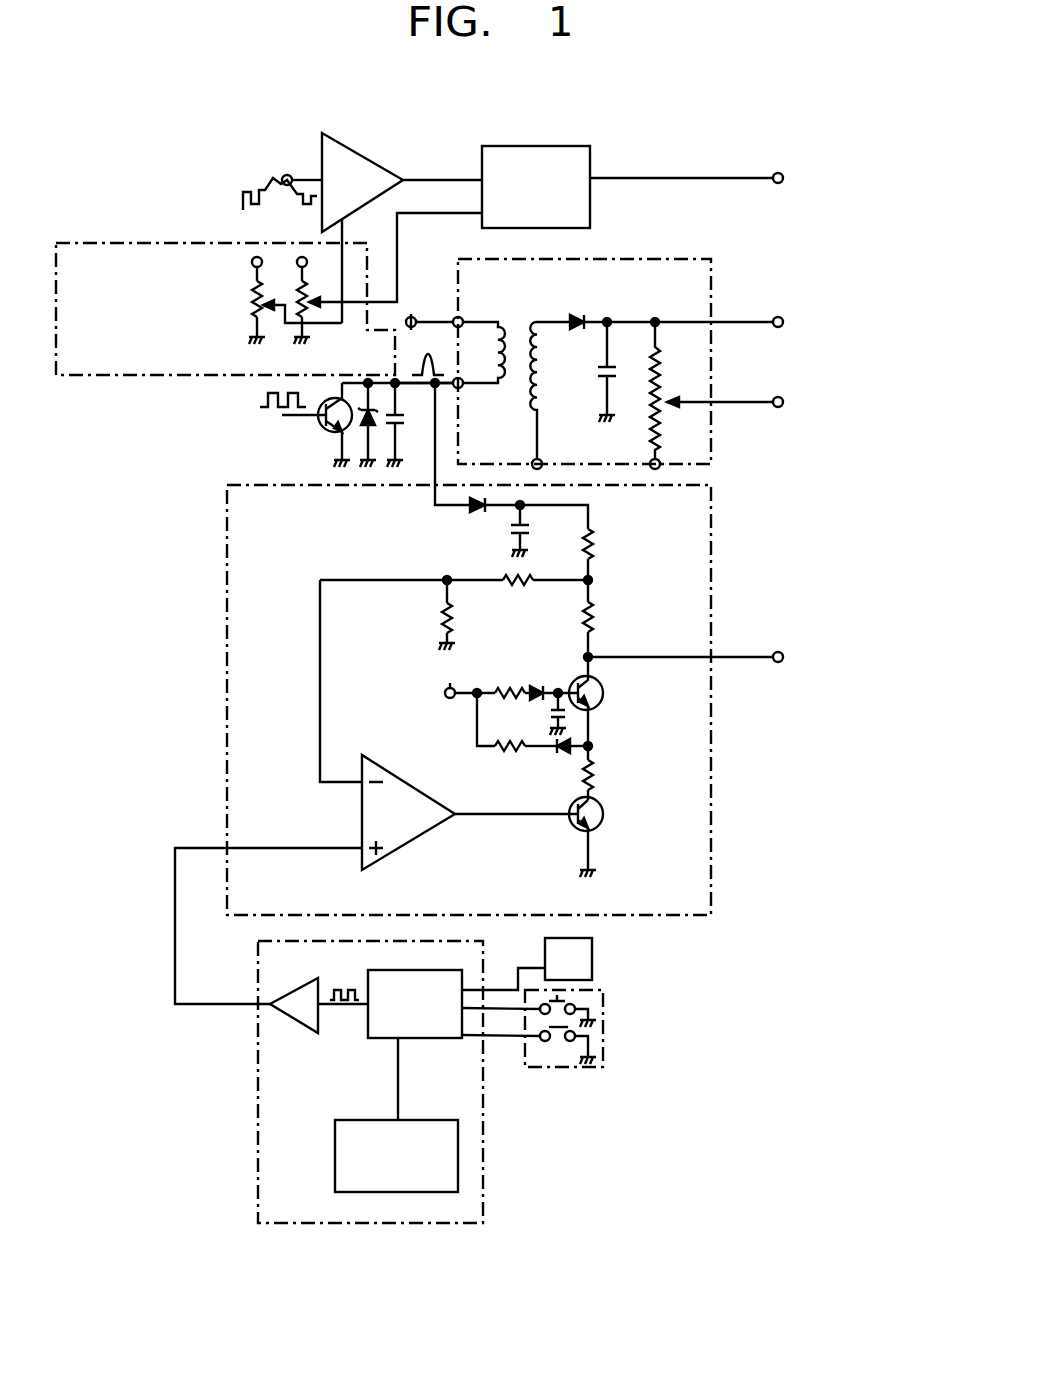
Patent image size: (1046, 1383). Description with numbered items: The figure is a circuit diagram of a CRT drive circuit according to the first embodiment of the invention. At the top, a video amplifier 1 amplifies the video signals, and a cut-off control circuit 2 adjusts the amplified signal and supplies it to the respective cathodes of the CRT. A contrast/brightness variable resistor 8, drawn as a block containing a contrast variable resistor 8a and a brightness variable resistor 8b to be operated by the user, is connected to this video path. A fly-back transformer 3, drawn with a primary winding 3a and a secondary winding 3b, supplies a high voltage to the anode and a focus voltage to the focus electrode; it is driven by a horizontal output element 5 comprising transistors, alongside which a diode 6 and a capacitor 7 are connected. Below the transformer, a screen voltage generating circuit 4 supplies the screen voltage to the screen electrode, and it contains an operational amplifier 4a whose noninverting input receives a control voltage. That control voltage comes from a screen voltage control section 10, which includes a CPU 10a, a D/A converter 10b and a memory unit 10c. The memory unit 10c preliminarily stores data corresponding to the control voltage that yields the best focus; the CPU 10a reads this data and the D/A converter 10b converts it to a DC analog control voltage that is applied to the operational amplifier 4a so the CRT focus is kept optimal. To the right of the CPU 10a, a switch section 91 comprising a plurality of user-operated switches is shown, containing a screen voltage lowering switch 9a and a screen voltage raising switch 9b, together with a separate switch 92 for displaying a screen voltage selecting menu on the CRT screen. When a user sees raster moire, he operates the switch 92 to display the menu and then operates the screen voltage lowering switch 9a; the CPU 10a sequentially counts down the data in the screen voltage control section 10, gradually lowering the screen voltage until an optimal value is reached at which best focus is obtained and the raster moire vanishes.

The video amplifier 1 is at (372, 151).
The cut-off control circuit 2 is at (560, 146).
The fly-back transformer 3 is at (678, 259).
The primary winding of flyback transformer 3a is at (500, 327).
The secondary winding of flyback transformer 3b is at (529, 328).
The screen voltage generating circuit 4 is at (713, 575).
The operational amplifier 4a is at (402, 777).
The horizontal output element 5 is at (318, 433).
The diode 6 is at (372, 425).
The capacitor 7 is at (403, 421).
The contrast/brightness variable resistor 8 is at (236, 388).
The contrast variable resistor 8a is at (250, 298).
The brightness variable resistor 8b is at (310, 298).
The screen voltage lowering switch 9a is at (570, 1000).
The screen voltage raising switch 9b is at (557, 1027).
The screen voltage control section 10 is at (485, 978).
The CPU 10a is at (412, 1038).
The D/A converter 10b is at (288, 1017).
The memory unit 10c is at (335, 1161).
The switch section 91 is at (603, 990).
The switch for displaying a screen voltage selecting menu 92 is at (592, 953).